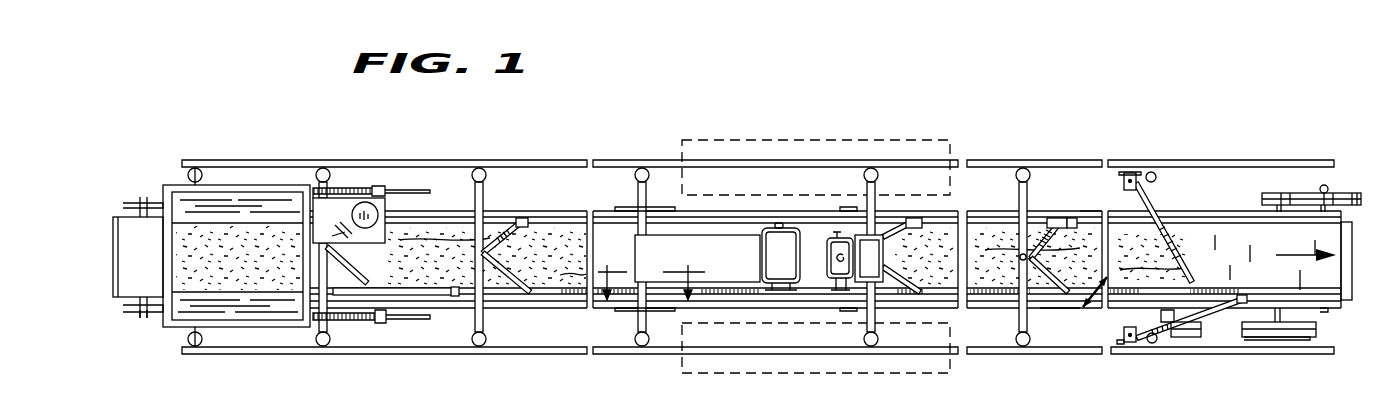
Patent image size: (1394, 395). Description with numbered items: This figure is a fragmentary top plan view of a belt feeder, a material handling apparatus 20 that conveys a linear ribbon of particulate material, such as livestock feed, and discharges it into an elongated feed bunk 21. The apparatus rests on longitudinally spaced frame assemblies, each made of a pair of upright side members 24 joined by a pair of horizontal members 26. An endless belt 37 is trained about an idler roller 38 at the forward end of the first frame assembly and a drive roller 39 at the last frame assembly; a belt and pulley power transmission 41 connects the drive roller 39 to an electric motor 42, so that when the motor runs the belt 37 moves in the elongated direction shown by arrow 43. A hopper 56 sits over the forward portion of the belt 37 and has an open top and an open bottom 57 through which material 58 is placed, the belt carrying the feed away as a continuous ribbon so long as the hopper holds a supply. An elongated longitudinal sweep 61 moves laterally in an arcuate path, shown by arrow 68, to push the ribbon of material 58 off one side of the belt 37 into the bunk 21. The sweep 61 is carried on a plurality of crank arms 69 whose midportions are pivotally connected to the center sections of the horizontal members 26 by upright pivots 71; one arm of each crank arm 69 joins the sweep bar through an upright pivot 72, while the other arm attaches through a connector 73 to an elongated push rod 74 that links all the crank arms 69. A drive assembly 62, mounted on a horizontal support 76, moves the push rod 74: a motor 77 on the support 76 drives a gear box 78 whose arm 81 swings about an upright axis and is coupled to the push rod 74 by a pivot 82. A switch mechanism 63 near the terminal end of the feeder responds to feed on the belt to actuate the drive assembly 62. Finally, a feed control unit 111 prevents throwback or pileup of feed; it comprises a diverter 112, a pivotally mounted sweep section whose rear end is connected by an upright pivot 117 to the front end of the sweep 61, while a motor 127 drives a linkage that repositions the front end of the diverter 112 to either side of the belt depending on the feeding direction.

The material handling apparatus 20 is at (546, 157).
The feed bunk 21 is at (882, 140).
The upright side members 24 is at (479, 167).
The horizontal members 26 is at (485, 198).
The endless belt 37 is at (132, 272).
The idler roller 38 is at (147, 318).
The drive roller 39 is at (1332, 303).
The belt and pulley power transmission 41 is at (1351, 197).
The electric motor 42 is at (1231, 305).
The arrow 43 is at (1306, 255).
The hopper 56 is at (218, 242).
The open bottom 57 is at (256, 294).
The material 58 is at (217, 233).
The sweep 61 is at (982, 300).
The drive assembly 62 is at (813, 190).
The switch mechanism 63 is at (1191, 192).
The arrow 68 is at (1096, 308).
The crank arms 69 is at (511, 291).
The upright pivots 71 is at (1021, 262).
The upright pivot 72 is at (1070, 298).
The connector 73 is at (1058, 218).
The push rod 74 is at (1094, 215).
The horizontal support 76 is at (741, 278).
The motor 77 is at (781, 245).
The gear box 78 is at (837, 240).
The arm 81 is at (862, 234).
The pivot 82 is at (886, 220).
The feed control unit 111 is at (375, 211).
The diverter 112 is at (415, 295).
The upright pivot 117 is at (457, 295).
The motor 127 is at (364, 206).